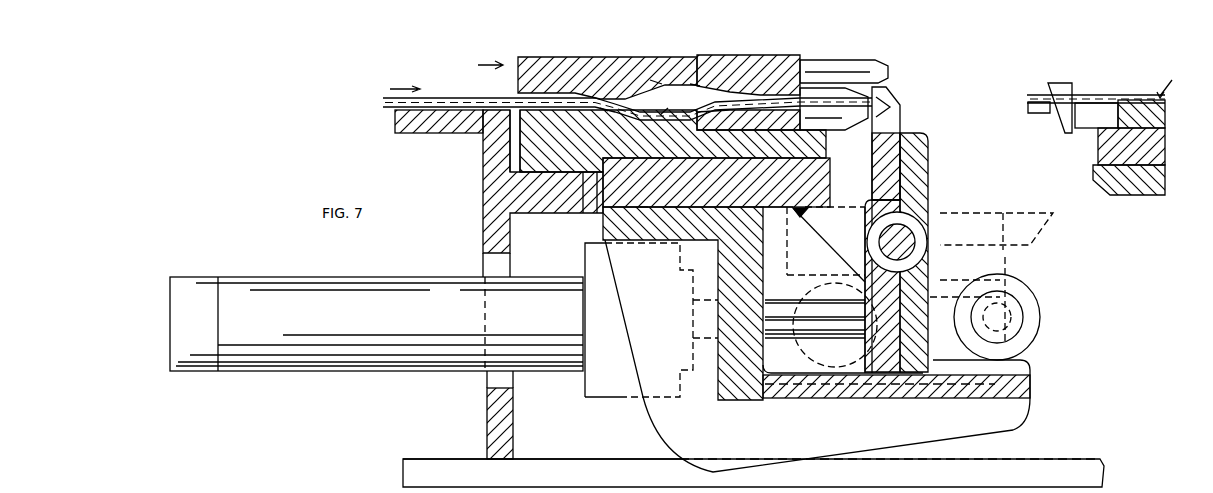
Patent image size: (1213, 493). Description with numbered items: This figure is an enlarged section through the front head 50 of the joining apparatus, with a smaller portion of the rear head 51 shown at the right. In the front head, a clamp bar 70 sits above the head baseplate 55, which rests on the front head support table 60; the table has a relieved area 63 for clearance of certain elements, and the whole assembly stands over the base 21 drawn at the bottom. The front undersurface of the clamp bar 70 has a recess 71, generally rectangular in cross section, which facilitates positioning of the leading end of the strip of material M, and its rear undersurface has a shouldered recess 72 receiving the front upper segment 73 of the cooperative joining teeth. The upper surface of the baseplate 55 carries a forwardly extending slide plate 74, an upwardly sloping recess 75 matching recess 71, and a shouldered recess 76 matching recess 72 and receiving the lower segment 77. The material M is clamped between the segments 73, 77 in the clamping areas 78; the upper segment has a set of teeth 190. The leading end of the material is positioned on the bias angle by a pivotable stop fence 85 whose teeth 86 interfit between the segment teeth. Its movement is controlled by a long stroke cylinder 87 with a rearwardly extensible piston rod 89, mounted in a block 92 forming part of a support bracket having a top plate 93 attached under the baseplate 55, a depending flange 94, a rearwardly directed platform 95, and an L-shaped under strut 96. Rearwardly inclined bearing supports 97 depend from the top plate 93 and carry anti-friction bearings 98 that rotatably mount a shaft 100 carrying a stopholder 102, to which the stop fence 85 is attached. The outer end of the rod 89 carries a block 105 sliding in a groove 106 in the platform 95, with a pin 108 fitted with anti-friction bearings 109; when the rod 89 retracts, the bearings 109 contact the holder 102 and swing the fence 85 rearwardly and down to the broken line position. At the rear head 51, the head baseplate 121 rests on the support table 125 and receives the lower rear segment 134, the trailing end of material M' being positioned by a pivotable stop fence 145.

The base plate 21 is at (405, 472).
The head 50 is at (478, 66).
The head 51 is at (1172, 79).
The head baseplate 55 is at (525, 137).
The front head support table 60 is at (495, 217).
The relieved area 63 is at (596, 203).
The clamp bar 70 is at (527, 70).
The recess 71 is at (650, 80).
The shouldered recess 72 is at (695, 83).
The front upper segment 73 is at (850, 68).
The slide plate 74 is at (392, 112).
The upwardly sloping recess 75 is at (610, 102).
The shouldered recess 76 is at (667, 104).
The lower segment 77 is at (822, 128).
The clamping areas 78 is at (807, 102).
The stop fence 85 is at (905, 172).
The teeth 86 is at (895, 126).
The long stroke cylinder 87 is at (312, 283).
The piston rod 89 is at (808, 325).
The block 92 is at (625, 393).
The top plate 93 is at (643, 207).
The flange 94 is at (745, 385).
The platform 95 is at (946, 392).
The L-shaped under strut 96 is at (1018, 424).
The bearing supports 97 is at (843, 192).
The anti-friction bearings 98 is at (940, 210).
The shaft 100 is at (918, 246).
The stopholder 102 is at (925, 262).
The block 105 is at (1030, 363).
The groove 106 is at (1033, 377).
The pin 108 is at (1000, 317).
The anti-friction bearing 109 is at (1037, 310).
The head baseplate 121 is at (1110, 147).
The support table 125 is at (1135, 190).
The lower rear segment 134 is at (1132, 100).
The stop fence 145 is at (1045, 113).
The teeth 190 is at (1056, 122).
The material M is at (616, 103).
The material M' is at (1096, 83).